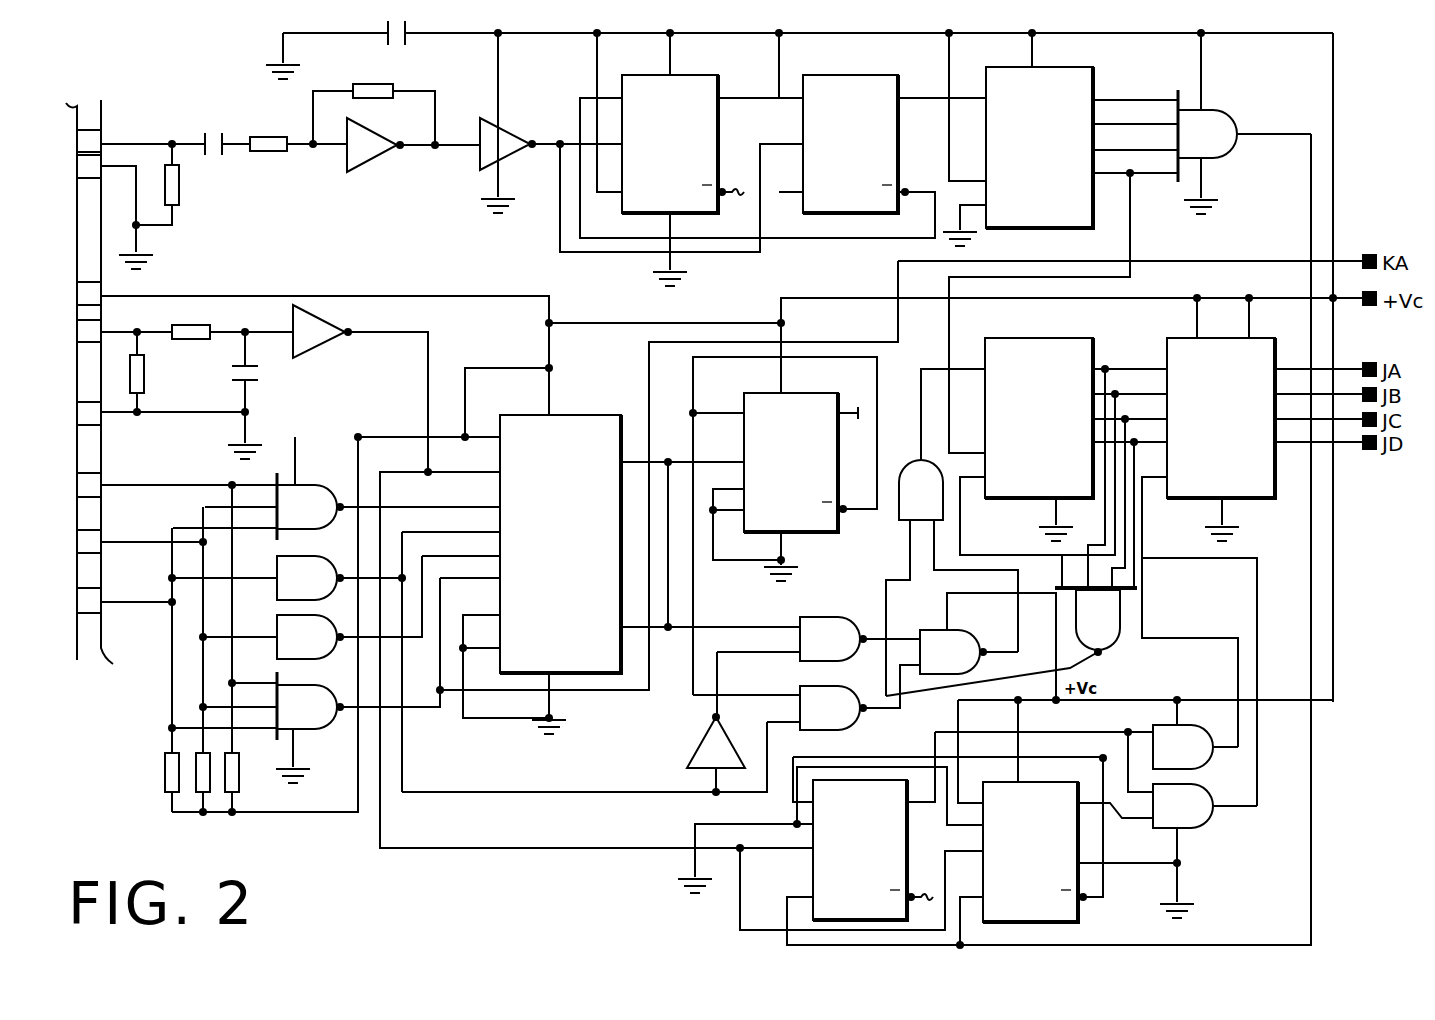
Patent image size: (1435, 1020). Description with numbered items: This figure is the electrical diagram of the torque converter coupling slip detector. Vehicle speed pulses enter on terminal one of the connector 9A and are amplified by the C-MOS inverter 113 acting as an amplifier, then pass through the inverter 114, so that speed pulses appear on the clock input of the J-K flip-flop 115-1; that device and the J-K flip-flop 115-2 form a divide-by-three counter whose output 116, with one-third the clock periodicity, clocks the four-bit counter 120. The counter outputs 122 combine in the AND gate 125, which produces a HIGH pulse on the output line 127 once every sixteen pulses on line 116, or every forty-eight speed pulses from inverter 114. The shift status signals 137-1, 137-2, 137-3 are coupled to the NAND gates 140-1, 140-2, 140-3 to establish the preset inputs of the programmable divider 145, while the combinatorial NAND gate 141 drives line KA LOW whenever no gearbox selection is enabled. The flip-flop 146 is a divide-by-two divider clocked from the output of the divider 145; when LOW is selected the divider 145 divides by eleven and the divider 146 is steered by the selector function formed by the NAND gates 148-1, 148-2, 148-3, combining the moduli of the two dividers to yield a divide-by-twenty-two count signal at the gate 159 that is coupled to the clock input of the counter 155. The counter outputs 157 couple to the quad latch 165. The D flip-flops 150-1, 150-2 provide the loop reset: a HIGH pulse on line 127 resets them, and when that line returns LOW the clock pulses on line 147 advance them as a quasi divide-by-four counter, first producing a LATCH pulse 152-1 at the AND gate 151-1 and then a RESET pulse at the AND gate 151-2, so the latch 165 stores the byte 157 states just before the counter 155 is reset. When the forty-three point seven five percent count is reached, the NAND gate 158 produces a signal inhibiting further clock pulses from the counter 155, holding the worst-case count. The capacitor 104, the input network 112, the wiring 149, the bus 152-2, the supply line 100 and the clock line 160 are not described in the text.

The connector 9A is at (101, 112).
The capacitor 104 is at (400, 46).
The input junction / filter network 112 is at (158, 143).
The inverter 113 is at (360, 156).
The inverter 114 is at (508, 142).
The J-K flip-flop 115-1 is at (730, 68).
The J-K flip-flop 115-2 is at (895, 85).
The output 116 is at (976, 88).
The four-bit counter 120 is at (1092, 78).
The counter outputs 122 is at (1160, 98).
The AND gate 125 is at (1222, 130).
The output line 127 is at (1311, 212).
The supply line 100 is at (458, 295).
The shift status signal 137-1 is at (147, 483).
The shift status signal 137-2 is at (148, 527).
The shift status signal 137-3 is at (145, 604).
The NAND gate 140-1 is at (321, 501).
The NAND gate 140-2 is at (323, 583).
The NAND gate 140-3 is at (318, 640).
The combinatorial NAND gate 141 is at (318, 712).
The programmable divider 145 is at (585, 415).
The flip-flop 146 is at (818, 404).
The clock line 147 is at (464, 461).
The NAND gate 148-1 is at (866, 604).
The NAND gate 148-2 is at (862, 686).
The NAND gate 148-3 is at (988, 629).
The gate input lines 149 is at (905, 580).
The D flip-flop 150-1 is at (887, 790).
The D flip-flop 150-2 is at (1040, 905).
The AND gate 151-1 is at (1183, 733).
The AND gate 151-2 is at (1205, 812).
The LATCH pulse 152-1 is at (1245, 672).
The AND gate input bus 152-2 is at (1253, 606).
The counter 155 is at (1097, 353).
The counter outputs 157 is at (1145, 361).
The NAND gate 158 is at (1108, 648).
The gate 159 is at (915, 482).
The counter clock line 160 is at (952, 362).
The quad latch 165 is at (1260, 474).